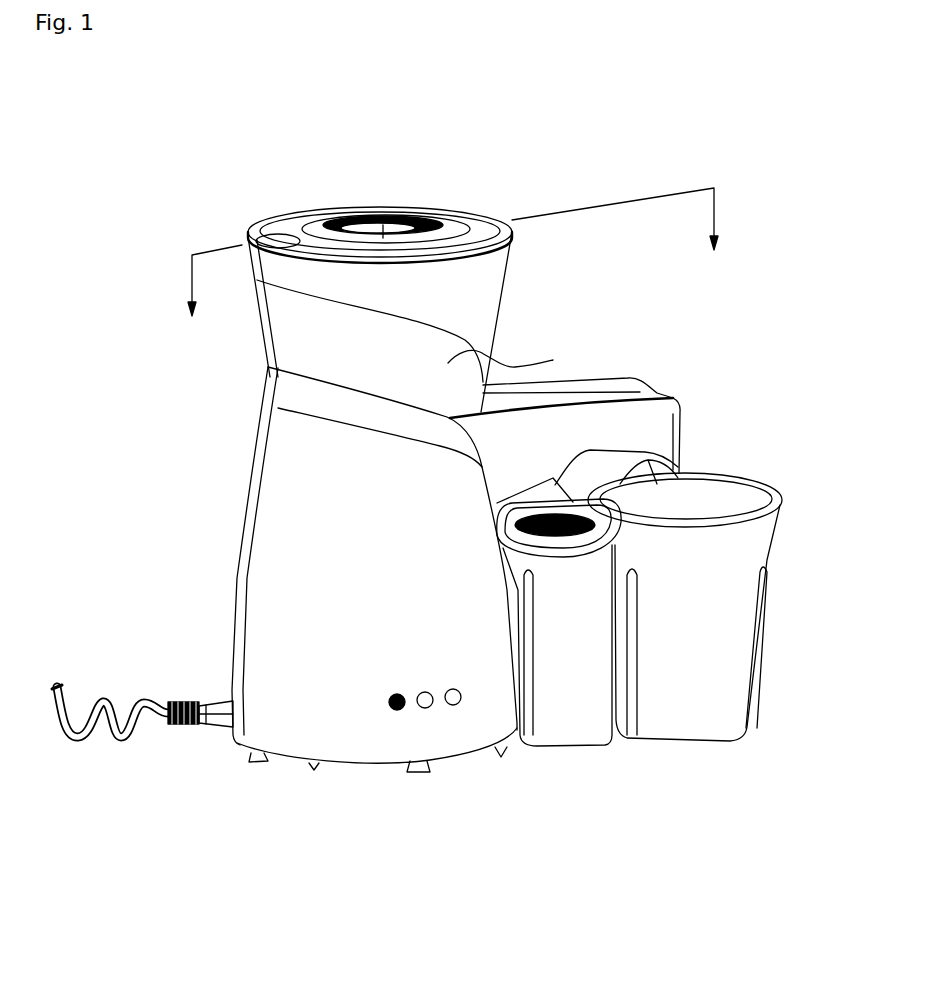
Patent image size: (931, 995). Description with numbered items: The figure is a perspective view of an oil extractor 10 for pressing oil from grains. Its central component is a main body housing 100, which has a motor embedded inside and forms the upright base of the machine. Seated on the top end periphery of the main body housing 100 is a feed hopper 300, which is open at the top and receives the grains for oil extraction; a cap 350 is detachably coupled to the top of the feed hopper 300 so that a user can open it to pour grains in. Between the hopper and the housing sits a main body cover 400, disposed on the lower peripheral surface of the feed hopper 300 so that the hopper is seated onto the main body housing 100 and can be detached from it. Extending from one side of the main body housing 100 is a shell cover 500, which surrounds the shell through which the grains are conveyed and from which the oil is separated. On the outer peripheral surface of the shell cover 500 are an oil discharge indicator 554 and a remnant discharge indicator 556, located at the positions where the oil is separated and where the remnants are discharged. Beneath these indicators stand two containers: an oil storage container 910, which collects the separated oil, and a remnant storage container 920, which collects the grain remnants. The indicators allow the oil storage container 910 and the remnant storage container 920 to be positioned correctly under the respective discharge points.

The oil extractor 10 is at (582, 86).
The main body housing 100 is at (265, 525).
The feed hopper 300 is at (505, 299).
The cap 350 is at (410, 207).
The main body cover 400 is at (448, 360).
The shell cover 500 is at (663, 380).
The oil discharge indicator 554 is at (675, 447).
The remnant discharge indicator 556 is at (674, 462).
The oil storage container 910 is at (576, 746).
The remnant storage container 920 is at (703, 742).